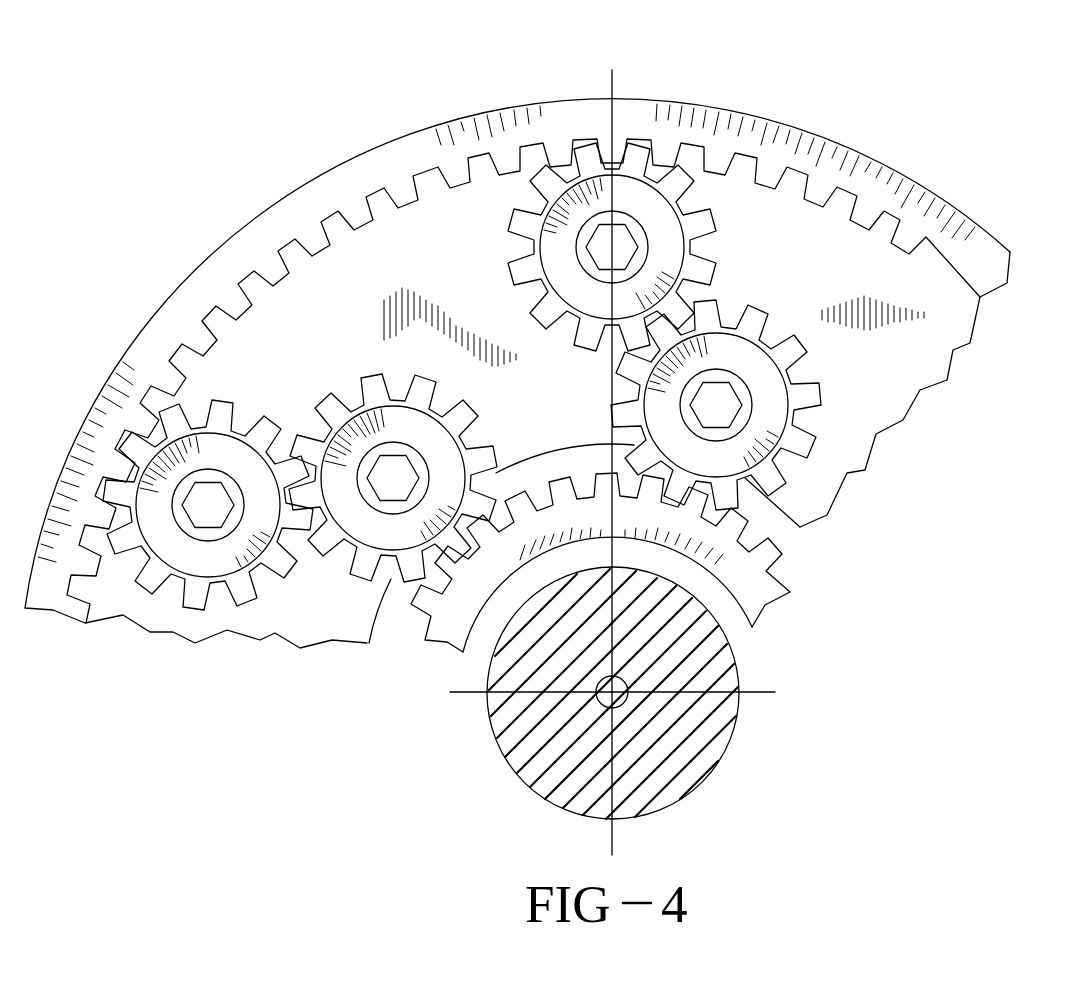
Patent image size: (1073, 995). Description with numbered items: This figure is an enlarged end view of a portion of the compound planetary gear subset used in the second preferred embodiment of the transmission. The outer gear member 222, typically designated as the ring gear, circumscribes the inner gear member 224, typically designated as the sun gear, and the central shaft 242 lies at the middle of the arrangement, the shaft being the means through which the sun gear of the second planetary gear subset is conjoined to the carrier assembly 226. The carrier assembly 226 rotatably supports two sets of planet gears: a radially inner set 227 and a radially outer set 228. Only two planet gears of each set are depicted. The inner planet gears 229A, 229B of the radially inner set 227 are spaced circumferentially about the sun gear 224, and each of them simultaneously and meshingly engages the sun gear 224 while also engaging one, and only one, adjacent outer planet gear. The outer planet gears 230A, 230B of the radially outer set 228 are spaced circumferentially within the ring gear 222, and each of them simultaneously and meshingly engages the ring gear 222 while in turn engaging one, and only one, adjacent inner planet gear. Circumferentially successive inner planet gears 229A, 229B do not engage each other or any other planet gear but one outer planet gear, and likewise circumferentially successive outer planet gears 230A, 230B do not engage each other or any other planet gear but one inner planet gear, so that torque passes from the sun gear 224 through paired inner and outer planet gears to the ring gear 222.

The outer gear member 222 is at (238, 268).
The inner gear member 224 is at (760, 582).
The carrier assembly 226 is at (935, 355).
The radially inner set 227 is at (805, 470).
The radially outer set 228 is at (708, 195).
The planet gear 229A is at (745, 362).
The planet gear 229B is at (370, 522).
The planet gear 230A is at (555, 262).
The planet gear 230B is at (240, 452).
The central shaft 242 is at (705, 750).